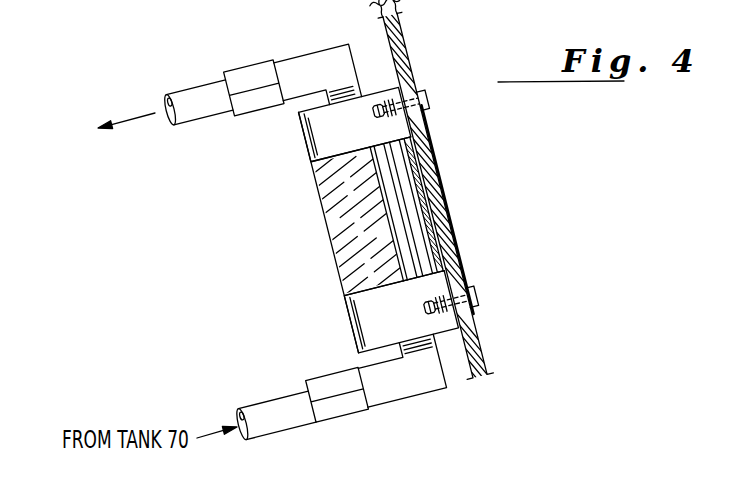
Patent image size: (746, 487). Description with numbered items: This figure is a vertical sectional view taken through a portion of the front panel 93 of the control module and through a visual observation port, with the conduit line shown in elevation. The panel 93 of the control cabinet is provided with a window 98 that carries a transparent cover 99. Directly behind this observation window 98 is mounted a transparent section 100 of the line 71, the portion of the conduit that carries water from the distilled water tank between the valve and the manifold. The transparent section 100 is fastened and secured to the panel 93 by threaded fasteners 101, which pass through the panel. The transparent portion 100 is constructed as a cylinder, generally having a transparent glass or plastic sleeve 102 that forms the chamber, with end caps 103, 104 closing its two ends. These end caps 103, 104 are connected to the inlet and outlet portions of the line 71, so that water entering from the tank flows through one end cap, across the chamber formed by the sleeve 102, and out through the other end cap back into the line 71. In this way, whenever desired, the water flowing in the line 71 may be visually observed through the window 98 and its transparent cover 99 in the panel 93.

The line 71 is at (313, 61).
The panel 93 is at (404, 60).
The window 98 is at (436, 146).
The transparent cover 99 is at (436, 200).
The transparent section 100 is at (319, 200).
The threaded fasteners 101 is at (422, 98).
The sleeve 102 is at (345, 222).
The end cap 103 is at (302, 138).
The end cap 104 is at (350, 322).